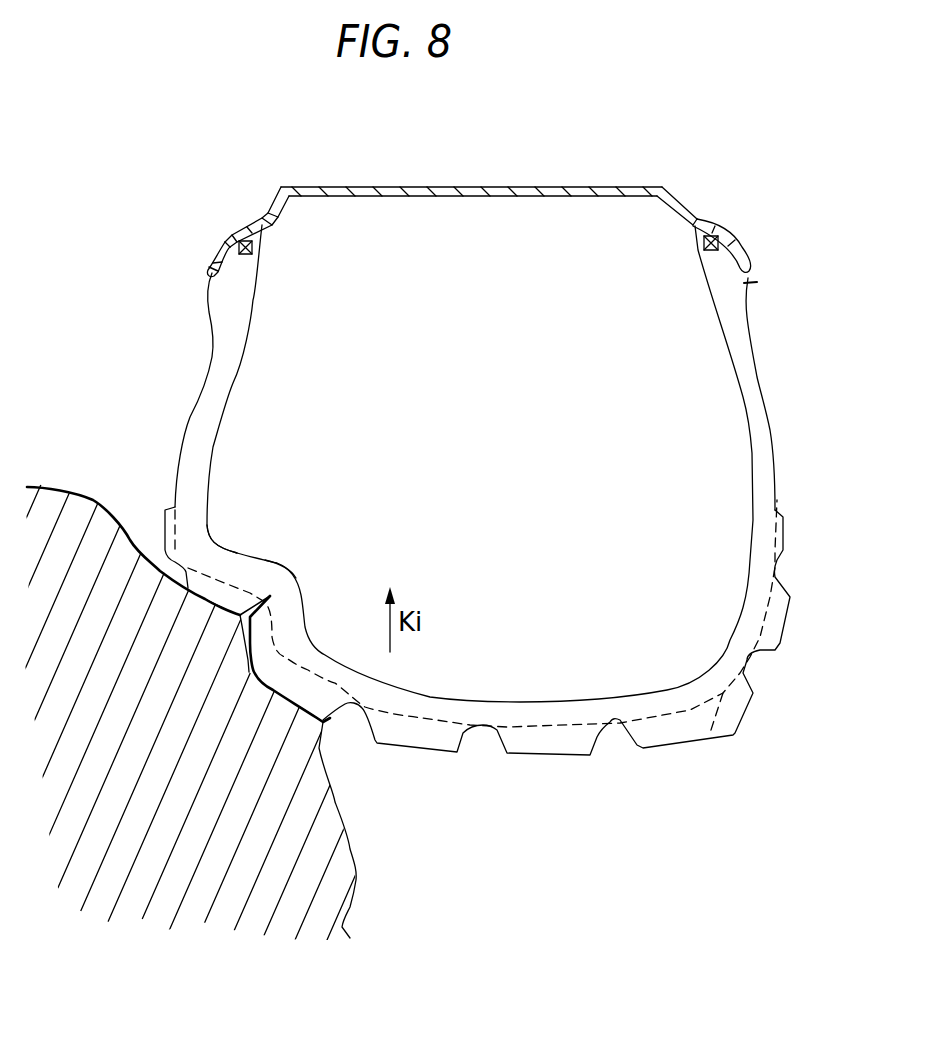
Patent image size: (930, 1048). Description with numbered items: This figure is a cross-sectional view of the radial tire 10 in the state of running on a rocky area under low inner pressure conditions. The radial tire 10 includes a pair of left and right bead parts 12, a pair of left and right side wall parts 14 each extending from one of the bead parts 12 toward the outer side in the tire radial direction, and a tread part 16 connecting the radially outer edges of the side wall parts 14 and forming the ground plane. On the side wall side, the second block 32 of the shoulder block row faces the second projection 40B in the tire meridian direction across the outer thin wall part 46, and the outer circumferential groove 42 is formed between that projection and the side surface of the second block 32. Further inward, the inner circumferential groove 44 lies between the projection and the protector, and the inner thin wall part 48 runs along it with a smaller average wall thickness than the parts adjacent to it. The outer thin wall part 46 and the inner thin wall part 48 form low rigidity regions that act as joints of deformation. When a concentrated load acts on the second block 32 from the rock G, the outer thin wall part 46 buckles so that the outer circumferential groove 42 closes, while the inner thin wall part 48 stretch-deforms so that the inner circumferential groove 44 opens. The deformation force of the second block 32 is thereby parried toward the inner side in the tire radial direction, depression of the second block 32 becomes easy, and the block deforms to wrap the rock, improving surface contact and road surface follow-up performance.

The radial tire 10 is at (560, 783).
The bead part 12 is at (747, 283).
The side wall part 14 is at (768, 440).
The tread part 16 is at (592, 752).
The second block 32 is at (330, 724).
The second projection 40B is at (223, 596).
The outer circumferential groove 42 is at (270, 597).
The inner circumferential groove 44 is at (165, 556).
The outer thin wall part 46 is at (266, 590).
The inner thin wall part 48 is at (197, 550).
The rock G is at (358, 880).